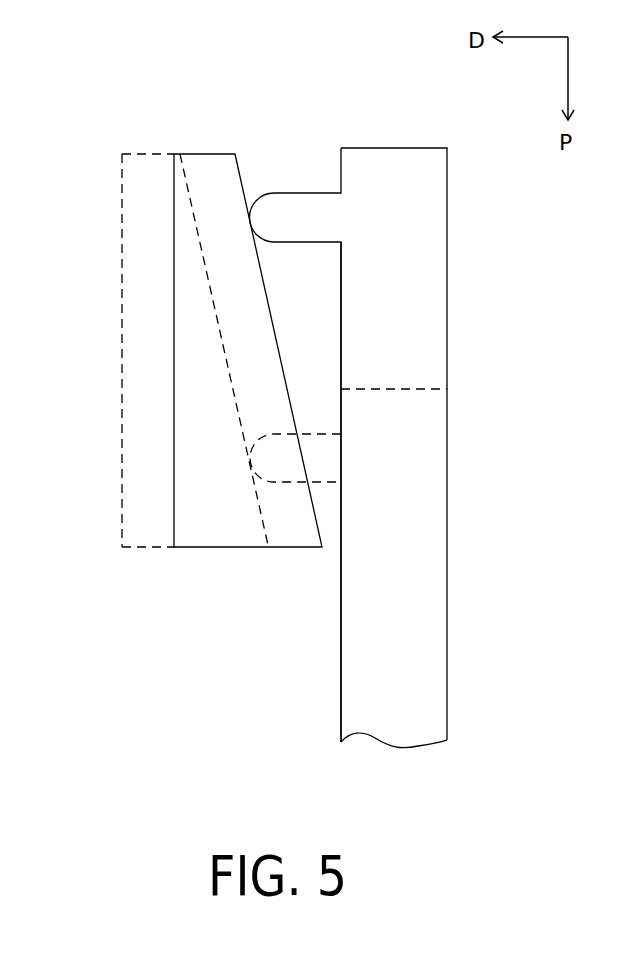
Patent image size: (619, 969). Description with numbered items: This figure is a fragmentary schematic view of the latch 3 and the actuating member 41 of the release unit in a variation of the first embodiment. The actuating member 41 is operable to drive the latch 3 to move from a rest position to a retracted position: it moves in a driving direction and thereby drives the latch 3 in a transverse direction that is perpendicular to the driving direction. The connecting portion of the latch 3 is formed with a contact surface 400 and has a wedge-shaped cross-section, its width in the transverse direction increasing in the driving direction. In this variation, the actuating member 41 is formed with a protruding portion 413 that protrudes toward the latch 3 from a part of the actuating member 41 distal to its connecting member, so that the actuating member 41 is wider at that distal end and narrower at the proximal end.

The latch 3 is at (195, 327).
The actuating member 41 is at (412, 232).
The contact surface 400 is at (282, 362).
The protruding portion 413 is at (287, 217).